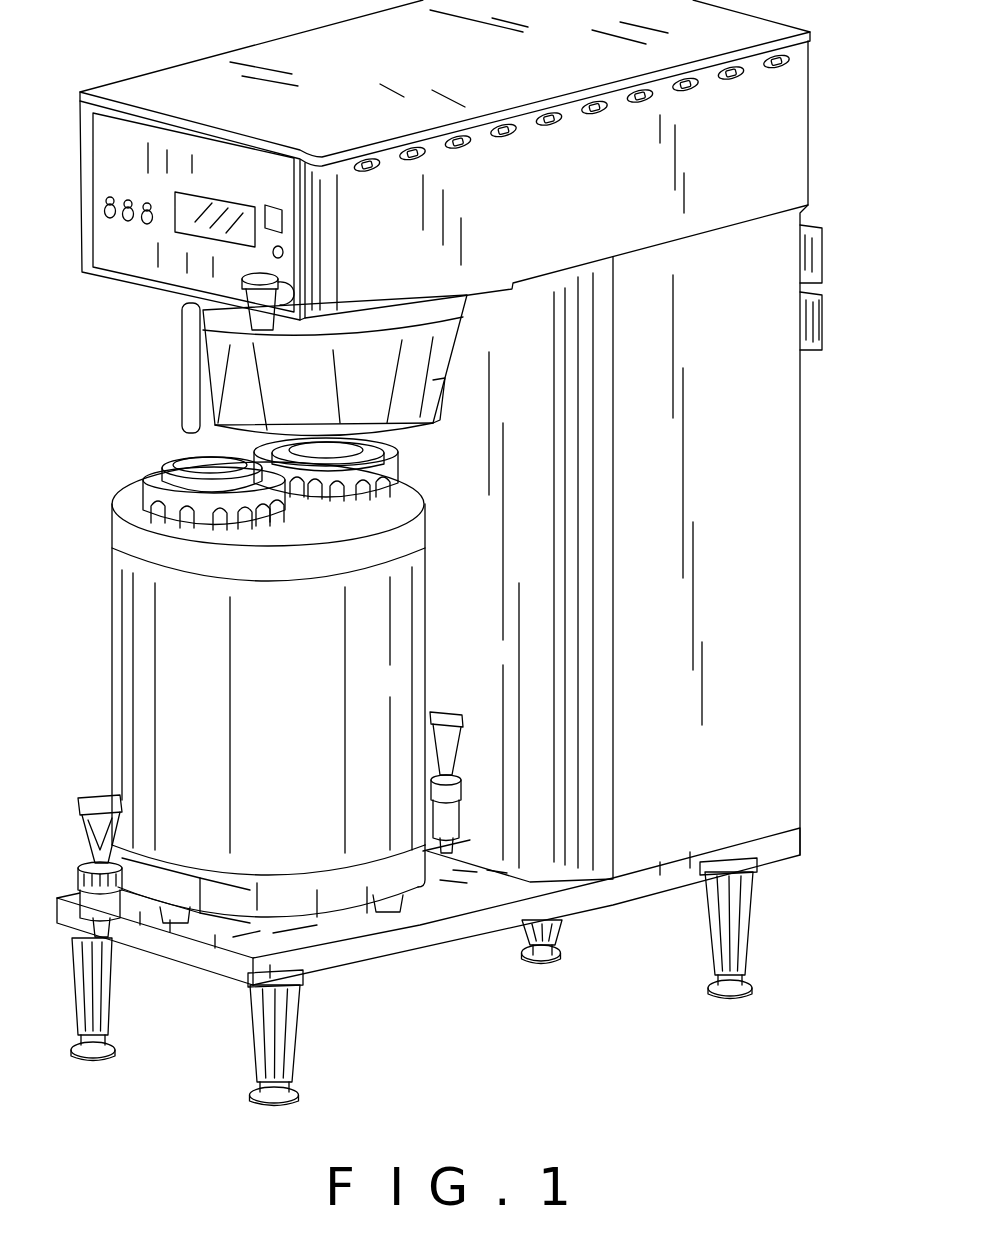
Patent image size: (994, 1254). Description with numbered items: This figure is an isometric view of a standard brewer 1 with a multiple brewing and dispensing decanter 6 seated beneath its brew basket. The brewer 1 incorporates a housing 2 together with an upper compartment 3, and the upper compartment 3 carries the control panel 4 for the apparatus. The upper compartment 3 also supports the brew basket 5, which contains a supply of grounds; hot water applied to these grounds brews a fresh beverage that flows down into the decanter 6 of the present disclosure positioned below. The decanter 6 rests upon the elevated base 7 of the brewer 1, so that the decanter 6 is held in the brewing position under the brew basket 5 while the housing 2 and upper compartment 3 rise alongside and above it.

The brewer 1 is at (473, 553).
The housing 2 is at (768, 548).
The upper compartment 3 is at (225, 77).
The control panel 4 is at (115, 150).
The brew basket 5 is at (225, 337).
The decanter 6 is at (105, 598).
The elevated base 7 is at (478, 882).